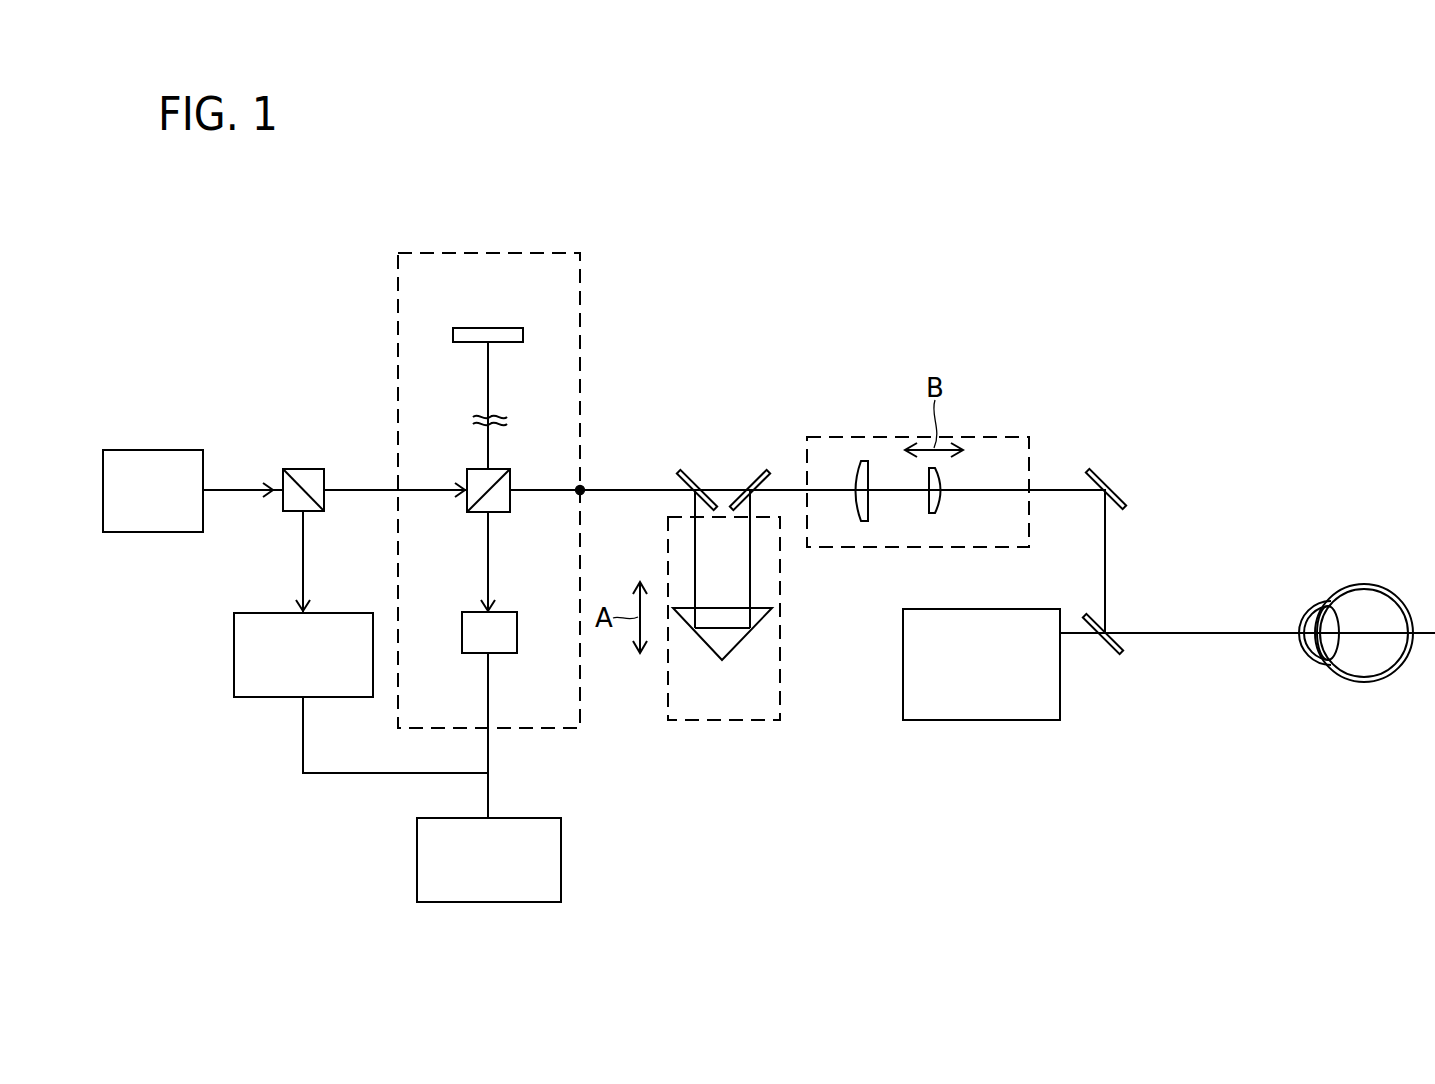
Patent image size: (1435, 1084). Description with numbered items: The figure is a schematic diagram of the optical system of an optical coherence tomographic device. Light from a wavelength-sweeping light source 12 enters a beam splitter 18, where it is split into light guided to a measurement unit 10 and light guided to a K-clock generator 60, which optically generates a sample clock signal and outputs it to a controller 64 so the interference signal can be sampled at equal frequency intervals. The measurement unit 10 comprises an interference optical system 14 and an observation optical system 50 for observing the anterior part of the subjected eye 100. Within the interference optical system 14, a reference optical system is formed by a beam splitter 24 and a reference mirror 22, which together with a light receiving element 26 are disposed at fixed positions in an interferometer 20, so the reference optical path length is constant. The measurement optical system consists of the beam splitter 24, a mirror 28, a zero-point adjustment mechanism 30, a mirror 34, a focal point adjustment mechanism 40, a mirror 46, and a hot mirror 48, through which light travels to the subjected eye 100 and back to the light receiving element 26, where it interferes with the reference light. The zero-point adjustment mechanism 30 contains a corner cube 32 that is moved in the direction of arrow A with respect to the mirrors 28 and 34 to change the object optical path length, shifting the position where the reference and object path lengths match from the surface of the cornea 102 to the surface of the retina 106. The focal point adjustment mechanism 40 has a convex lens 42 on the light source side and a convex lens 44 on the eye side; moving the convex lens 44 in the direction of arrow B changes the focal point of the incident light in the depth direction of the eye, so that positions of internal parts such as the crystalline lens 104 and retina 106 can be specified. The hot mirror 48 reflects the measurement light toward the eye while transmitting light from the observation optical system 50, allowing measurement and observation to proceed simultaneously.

The measurement unit 10 is at (705, 243).
The light source 12 is at (187, 449).
The interference optical system 14 is at (947, 302).
The beam splitter 18 is at (316, 469).
The interferometer 20 is at (553, 253).
The reference mirror 22 is at (500, 328).
The beam splitter 24 is at (501, 469).
The light receiving element 26 is at (505, 612).
The mirror 28 is at (696, 470).
The 0-point adjustment mechanism 30 is at (725, 722).
The corner cube 32 is at (746, 640).
The mirror 34 is at (748, 470).
The focal point adjustment mechanism 40 is at (885, 437).
The convex lens 42 is at (862, 522).
The convex lens 44 is at (934, 514).
The mirror 46 is at (1100, 470).
The hot mirror 48 is at (1110, 652).
The observation optical system 50 is at (980, 720).
The K-clock generator 60 is at (351, 613).
The controller 64 is at (522, 818).
The subjected eye 100 is at (1349, 615).
The cornea 102 is at (1298, 646).
The crystalline lens 104 is at (1323, 648).
The retina 106 is at (1393, 650).